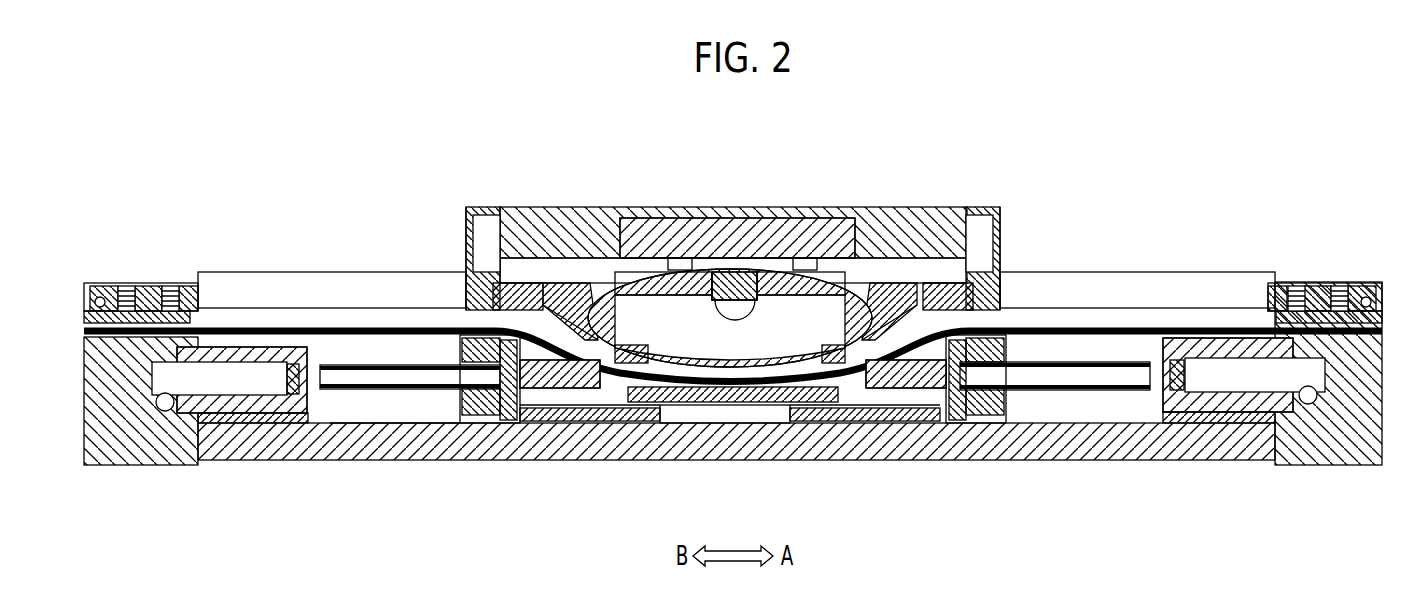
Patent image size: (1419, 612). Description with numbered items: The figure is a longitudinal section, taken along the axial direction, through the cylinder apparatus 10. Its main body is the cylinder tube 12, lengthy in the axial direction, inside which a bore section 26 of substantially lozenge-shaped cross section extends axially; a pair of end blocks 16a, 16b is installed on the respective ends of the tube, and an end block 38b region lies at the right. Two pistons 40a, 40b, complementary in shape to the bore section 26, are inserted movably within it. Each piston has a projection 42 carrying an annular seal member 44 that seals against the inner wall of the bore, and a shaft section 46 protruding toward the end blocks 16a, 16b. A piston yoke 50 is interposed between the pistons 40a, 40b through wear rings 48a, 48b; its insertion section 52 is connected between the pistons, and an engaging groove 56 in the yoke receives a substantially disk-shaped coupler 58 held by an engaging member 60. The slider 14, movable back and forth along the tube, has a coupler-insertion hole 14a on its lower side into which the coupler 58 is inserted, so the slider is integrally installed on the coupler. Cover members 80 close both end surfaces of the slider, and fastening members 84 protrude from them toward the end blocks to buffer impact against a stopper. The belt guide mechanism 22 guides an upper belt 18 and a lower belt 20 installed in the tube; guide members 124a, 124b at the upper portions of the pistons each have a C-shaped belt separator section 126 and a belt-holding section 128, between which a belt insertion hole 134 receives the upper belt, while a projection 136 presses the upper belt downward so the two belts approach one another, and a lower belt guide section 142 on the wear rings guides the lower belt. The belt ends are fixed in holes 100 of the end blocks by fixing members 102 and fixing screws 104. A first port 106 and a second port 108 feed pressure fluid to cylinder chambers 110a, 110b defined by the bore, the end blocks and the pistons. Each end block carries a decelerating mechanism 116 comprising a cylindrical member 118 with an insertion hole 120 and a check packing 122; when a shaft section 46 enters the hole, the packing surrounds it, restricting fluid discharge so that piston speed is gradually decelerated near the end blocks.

The cylinder apparatus 10 is at (895, 105).
The cylinder tube 12 is at (468, 440).
The slider 14 is at (620, 208).
The coupler-insertion hole 14a is at (805, 265).
The end block 16a is at (142, 452).
The end block 16b is at (1335, 450).
The upper belt 18 is at (362, 300).
The lower belt 20 is at (332, 336).
The belt guide mechanism 22 is at (778, 300).
The bore section 26 is at (398, 428).
The right upper block 38b is at (1105, 285).
The piston 40a is at (500, 425).
The piston 40b is at (965, 425).
The projection 42 is at (462, 400).
The seal member 44 is at (462, 350).
The shaft section 46 is at (400, 390).
The wear ring 48a is at (600, 421).
The wear ring 48b is at (865, 421).
The piston yoke 50 is at (718, 403).
The insertion section 52 is at (752, 412).
The engaging groove 56 is at (737, 318).
The coupler 58 is at (737, 238).
The engaging member 60 is at (720, 308).
The cover member 80 is at (480, 206).
The fastening member 84 is at (466, 237).
The hole 100 is at (128, 298).
The fixing member 102 is at (100, 296).
The fixing screw 104 is at (150, 298).
The first port 106 is at (166, 412).
The second port 108 is at (1306, 405).
The cylinder chamber 110a is at (315, 423).
The cylinder chamber 110b is at (1135, 423).
The decelerating mechanism 116 is at (250, 328).
The cylindrical member 118 is at (265, 415).
The insertion hole 120 is at (270, 365).
The check packing 122 is at (300, 362).
The guide member 124a is at (682, 262).
The guide member 124b is at (812, 262).
The belt separator section 126 is at (622, 308).
The belt-holding section 128 is at (522, 287).
The belt insertion hole 134 is at (562, 284).
The projection 136 is at (493, 297).
The lower belt guide section 142 is at (575, 312).